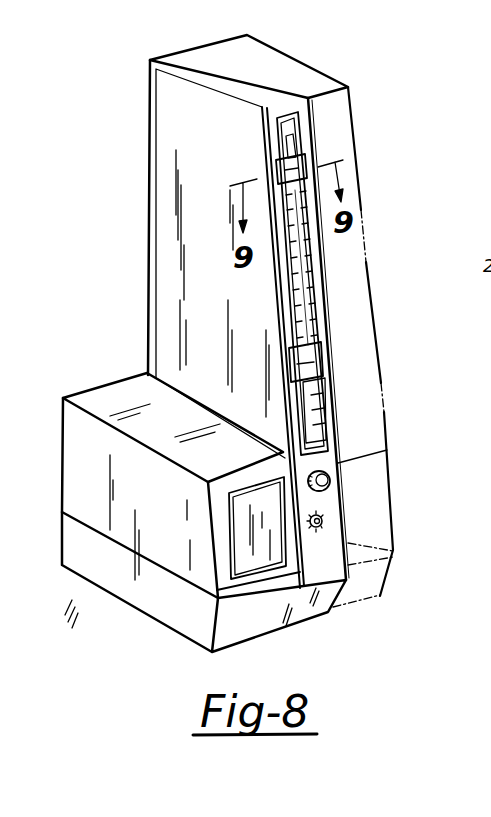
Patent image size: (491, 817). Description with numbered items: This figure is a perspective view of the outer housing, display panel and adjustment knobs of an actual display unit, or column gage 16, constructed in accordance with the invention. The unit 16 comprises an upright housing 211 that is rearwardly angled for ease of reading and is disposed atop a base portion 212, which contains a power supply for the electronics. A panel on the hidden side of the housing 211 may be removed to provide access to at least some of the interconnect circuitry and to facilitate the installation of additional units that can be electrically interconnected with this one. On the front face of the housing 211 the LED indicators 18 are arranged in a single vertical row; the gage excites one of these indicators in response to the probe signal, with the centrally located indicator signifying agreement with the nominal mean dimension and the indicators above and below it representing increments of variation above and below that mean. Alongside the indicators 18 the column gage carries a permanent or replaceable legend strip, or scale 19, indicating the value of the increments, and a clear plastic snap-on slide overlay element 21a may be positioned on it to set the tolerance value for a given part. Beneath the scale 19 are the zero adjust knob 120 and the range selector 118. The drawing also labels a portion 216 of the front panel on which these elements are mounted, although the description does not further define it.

The column gage 16 is at (168, 57).
The legend strip 19 is at (300, 113).
The slide overlay element 21a is at (310, 160).
The upright housing 211 is at (165, 188).
The base portion 212 is at (103, 388).
The front panel 216 is at (322, 366).
The LED indicators 18 is at (302, 278).
The zero adjust knob 120 is at (330, 477).
The range selector 118 is at (324, 521).